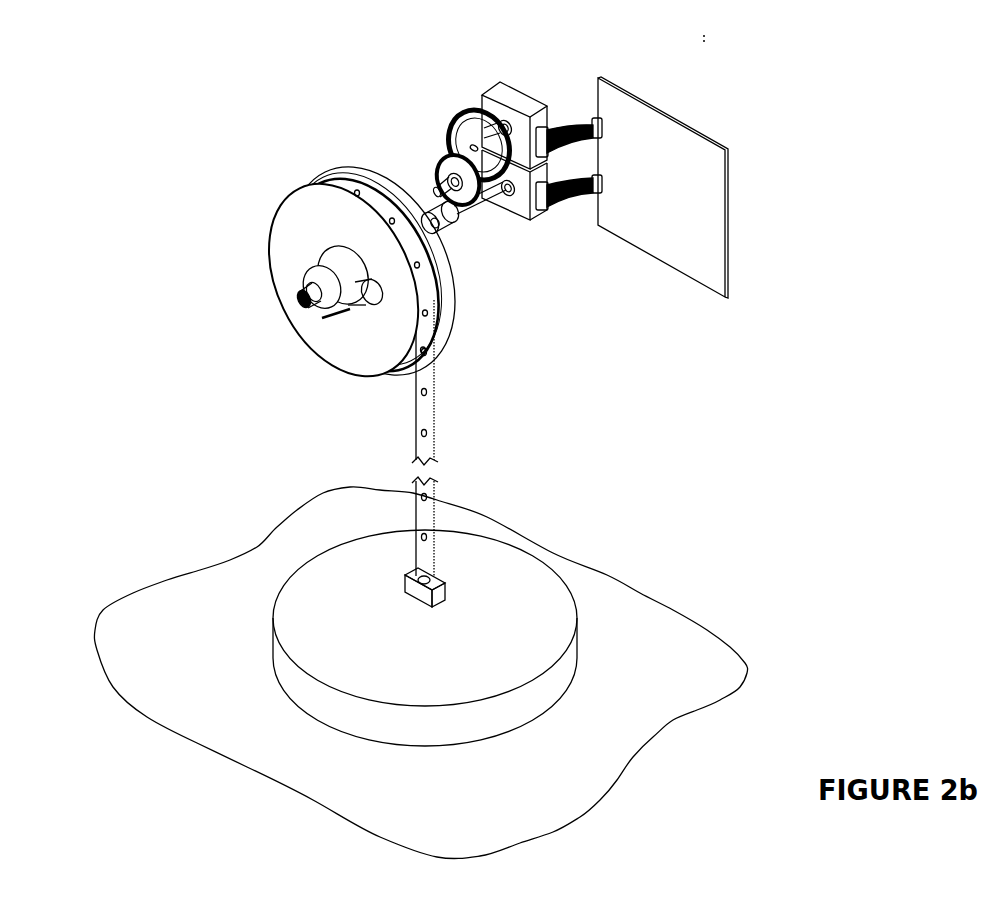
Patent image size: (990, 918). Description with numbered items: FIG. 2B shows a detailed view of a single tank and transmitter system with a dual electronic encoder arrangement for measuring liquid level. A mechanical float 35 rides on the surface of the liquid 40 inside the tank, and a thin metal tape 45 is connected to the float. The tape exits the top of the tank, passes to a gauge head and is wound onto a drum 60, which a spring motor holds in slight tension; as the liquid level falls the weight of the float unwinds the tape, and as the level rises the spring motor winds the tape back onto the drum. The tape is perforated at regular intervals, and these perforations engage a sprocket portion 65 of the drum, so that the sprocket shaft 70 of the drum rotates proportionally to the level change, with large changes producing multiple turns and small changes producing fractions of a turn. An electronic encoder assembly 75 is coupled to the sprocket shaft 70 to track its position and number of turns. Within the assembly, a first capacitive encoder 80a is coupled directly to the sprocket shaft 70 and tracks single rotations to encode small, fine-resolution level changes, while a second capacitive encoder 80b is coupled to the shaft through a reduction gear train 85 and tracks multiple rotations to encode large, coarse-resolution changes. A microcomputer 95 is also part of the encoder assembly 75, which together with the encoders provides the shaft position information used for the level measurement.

The mechanical float 35 is at (559, 574).
The liquid 40 is at (420, 673).
The thin metal tape 45 is at (416, 365).
The drum 60 is at (327, 242).
The sprocket portion 65 is at (356, 183).
The sprocket shaft 70 is at (418, 214).
The electronic encoder assembly 75 is at (491, 69).
The first capacitive encoder 80a is at (541, 221).
The second capacitive encoder 80b is at (575, 95).
The reduction gear train 85 is at (545, 258).
The microcomputer 95 is at (725, 187).